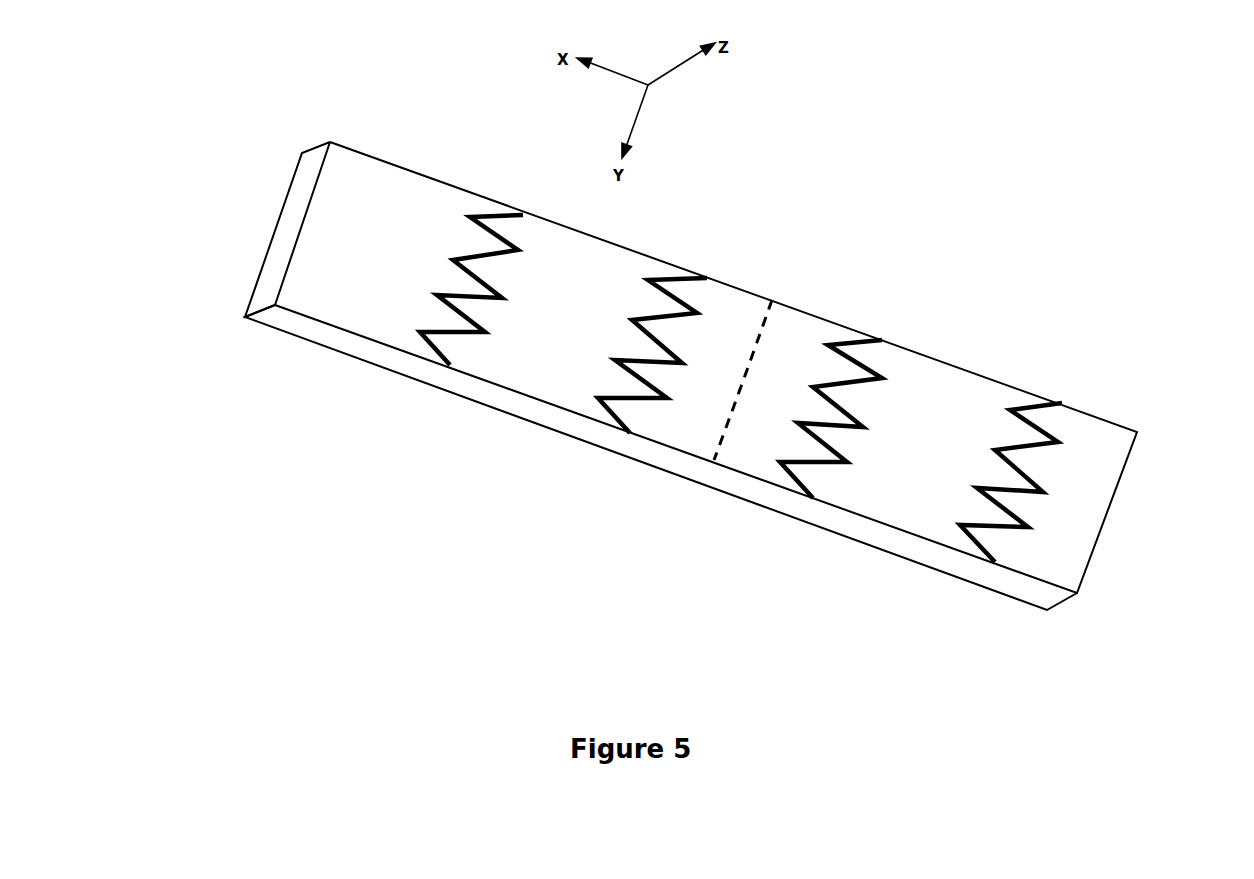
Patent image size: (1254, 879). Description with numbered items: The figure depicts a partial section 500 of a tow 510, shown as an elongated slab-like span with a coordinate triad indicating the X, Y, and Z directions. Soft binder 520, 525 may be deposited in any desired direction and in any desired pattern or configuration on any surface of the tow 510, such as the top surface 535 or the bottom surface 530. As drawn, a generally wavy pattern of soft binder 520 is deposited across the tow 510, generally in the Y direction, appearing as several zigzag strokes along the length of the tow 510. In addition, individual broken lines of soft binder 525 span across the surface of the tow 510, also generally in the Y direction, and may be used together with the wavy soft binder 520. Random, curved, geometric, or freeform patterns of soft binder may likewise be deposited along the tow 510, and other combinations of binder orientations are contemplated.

The partial section 500 is at (962, 124).
The tow 510 is at (897, 472).
The soft binder 520 is at (1053, 448).
The soft binder 525 is at (773, 300).
The bottom surface 530 is at (287, 208).
The top surface 535 is at (815, 347).